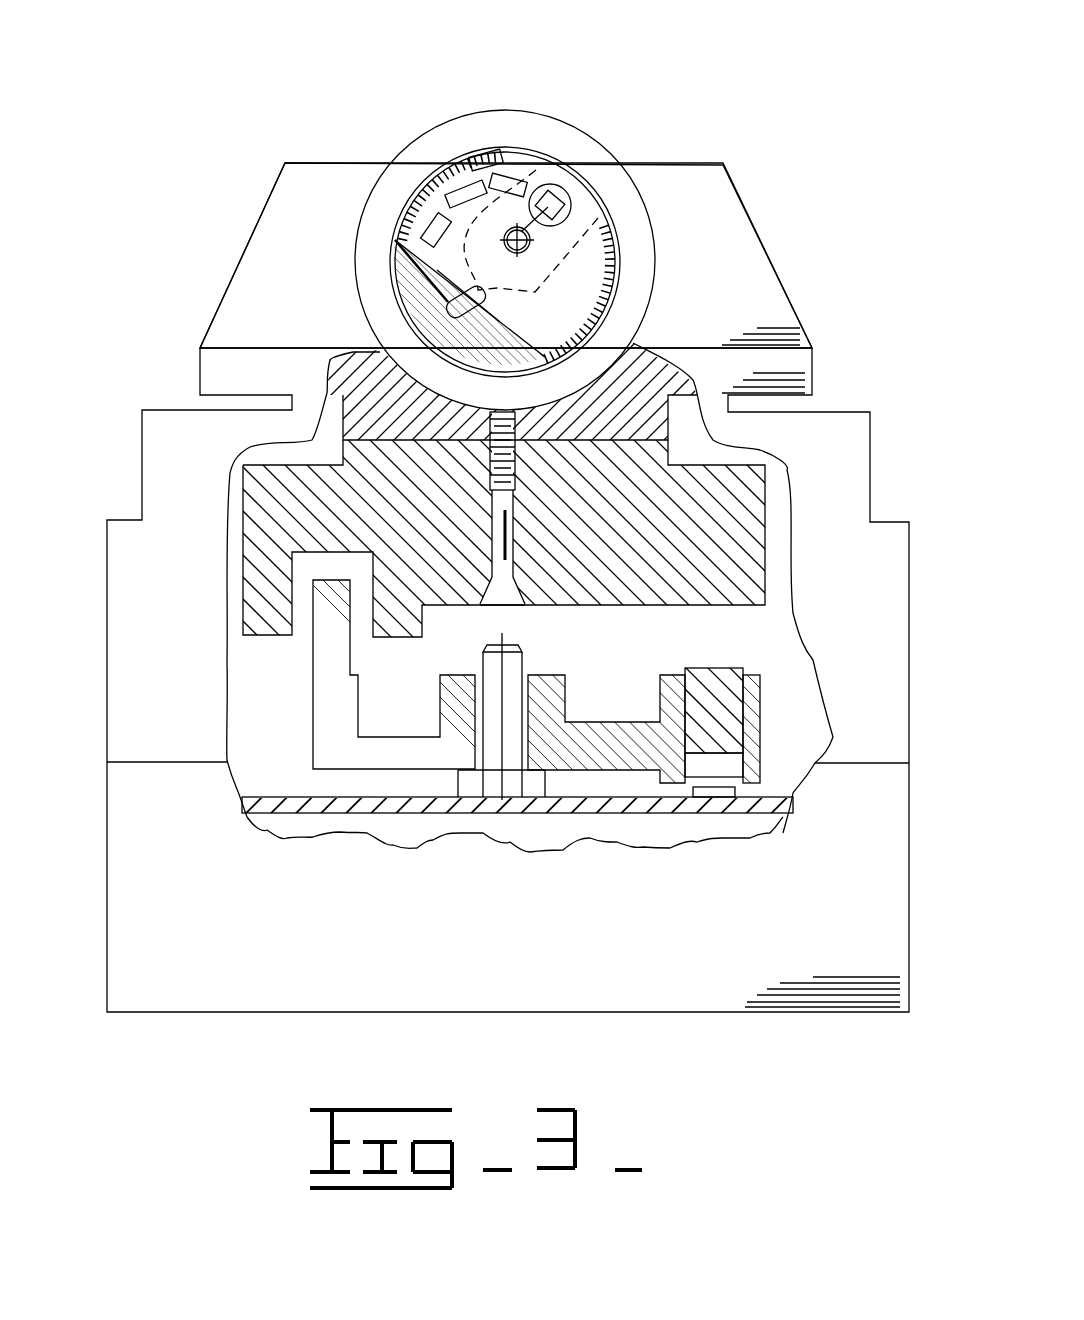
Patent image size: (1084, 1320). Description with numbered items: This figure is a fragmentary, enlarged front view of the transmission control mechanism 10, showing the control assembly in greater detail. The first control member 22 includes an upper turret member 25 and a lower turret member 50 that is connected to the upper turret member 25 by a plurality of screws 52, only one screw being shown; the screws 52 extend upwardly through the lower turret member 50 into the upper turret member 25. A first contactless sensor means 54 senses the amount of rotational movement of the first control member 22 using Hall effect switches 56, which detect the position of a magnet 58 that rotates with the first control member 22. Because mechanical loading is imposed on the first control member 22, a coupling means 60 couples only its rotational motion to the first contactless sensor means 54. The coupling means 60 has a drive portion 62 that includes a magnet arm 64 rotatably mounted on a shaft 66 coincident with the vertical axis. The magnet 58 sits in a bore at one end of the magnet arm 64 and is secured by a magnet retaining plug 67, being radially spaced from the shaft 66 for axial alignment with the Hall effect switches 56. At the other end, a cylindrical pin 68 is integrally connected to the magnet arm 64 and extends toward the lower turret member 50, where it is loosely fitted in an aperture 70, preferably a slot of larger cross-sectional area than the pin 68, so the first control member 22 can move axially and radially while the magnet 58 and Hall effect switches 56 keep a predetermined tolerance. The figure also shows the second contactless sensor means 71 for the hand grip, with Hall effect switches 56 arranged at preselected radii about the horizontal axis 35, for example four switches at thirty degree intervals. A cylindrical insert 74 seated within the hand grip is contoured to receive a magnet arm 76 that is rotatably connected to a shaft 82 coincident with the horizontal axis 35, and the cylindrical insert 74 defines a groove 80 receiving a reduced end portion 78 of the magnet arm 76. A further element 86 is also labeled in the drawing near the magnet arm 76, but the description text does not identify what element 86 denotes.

The transmission control mechanism 10 is at (215, 68).
The second contactless sensor means 71 is at (323, 91).
The first control member 22 is at (735, 138).
The upper turret member 25 is at (757, 237).
The horizontal axis 35 is at (398, 370).
The lower turret member 50 is at (747, 457).
The screws 52 is at (515, 517).
The first contactless sensor means 54 is at (835, 751).
The Hall effect switches 56 is at (520, 177).
The magnet 58 is at (733, 763).
The coupling means 60 is at (208, 708).
The drive portion 62 is at (215, 672).
The magnet arm 64 is at (620, 675).
The shaft 66 is at (517, 657).
The magnet retaining plug 67 is at (738, 705).
The cylindrical pin 68 is at (313, 657).
The aperture 70 is at (362, 642).
The cylindrical insert 74 is at (613, 287).
The magnet arm 76 is at (587, 222).
The reduced end portion 78 is at (475, 295).
The groove 80 is at (400, 247).
The shaft 82 is at (563, 240).
The pin 86 is at (551, 184).